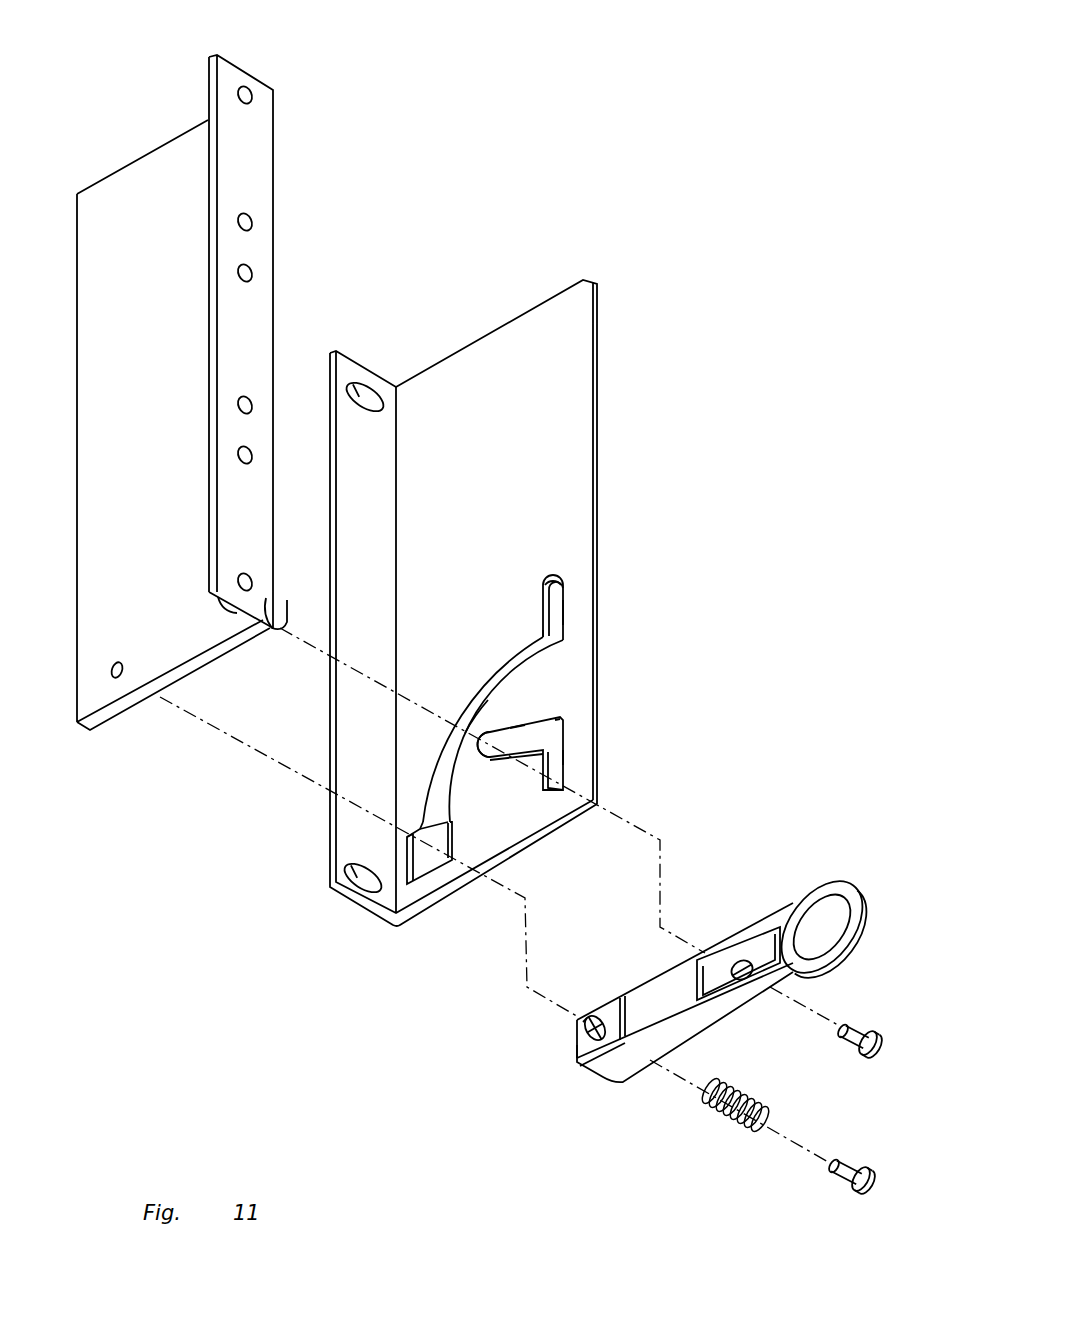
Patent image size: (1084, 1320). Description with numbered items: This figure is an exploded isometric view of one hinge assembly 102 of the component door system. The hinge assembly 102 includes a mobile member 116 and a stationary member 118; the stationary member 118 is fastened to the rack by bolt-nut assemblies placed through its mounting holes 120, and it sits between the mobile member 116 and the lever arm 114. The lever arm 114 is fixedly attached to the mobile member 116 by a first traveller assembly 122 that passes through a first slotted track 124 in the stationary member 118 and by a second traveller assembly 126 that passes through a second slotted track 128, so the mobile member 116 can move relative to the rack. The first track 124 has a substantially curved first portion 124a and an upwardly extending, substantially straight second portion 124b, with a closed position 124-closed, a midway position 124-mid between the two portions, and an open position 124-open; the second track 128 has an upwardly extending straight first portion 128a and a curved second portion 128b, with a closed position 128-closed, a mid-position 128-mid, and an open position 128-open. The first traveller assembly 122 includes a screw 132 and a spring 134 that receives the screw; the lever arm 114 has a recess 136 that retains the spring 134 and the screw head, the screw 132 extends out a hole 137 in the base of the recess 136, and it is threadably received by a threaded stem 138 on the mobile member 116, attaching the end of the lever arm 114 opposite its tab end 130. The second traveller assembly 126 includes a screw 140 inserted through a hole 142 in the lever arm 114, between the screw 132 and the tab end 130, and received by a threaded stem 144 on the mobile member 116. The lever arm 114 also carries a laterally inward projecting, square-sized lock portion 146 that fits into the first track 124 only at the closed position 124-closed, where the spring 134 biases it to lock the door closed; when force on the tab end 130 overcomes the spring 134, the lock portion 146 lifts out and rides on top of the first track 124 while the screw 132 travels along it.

The hinge assembly 102 is at (669, 74).
The lever arm 114 is at (613, 1070).
The mobile member 116 is at (115, 170).
The stationary member 118 is at (510, 322).
The mounting holes 120 is at (363, 395).
The first traveller assembly 122 is at (699, 1191).
The first slotted track 124 is at (497, 670).
The first portion of first track 124a is at (470, 710).
The second portion of first track 124b is at (566, 613).
The open position of first track 124-open is at (558, 592).
The midway position of first track 124-mid is at (556, 638).
The closed position of first track 124-closed is at (423, 862).
The second traveller assembly 126 is at (870, 1000).
The second slotted track 128 is at (541, 737).
The first portion of second track 128a is at (567, 757).
The second portion of second track 128b is at (518, 720).
The open position of second track 128-open is at (489, 758).
The mid-position of second track 128-mid is at (560, 732).
The closed position of second track 128-closed is at (594, 807).
The tab end 130 is at (857, 887).
The screw 132 is at (845, 1177).
The spring 134 is at (731, 1124).
The recess 136 is at (583, 1028).
The hole 137 is at (596, 1018).
The threaded stem 138 is at (157, 695).
The screw 140 is at (845, 1047).
The hole 142 is at (742, 960).
The threaded stem 144 is at (277, 610).
The lock portion 146 is at (582, 1050).